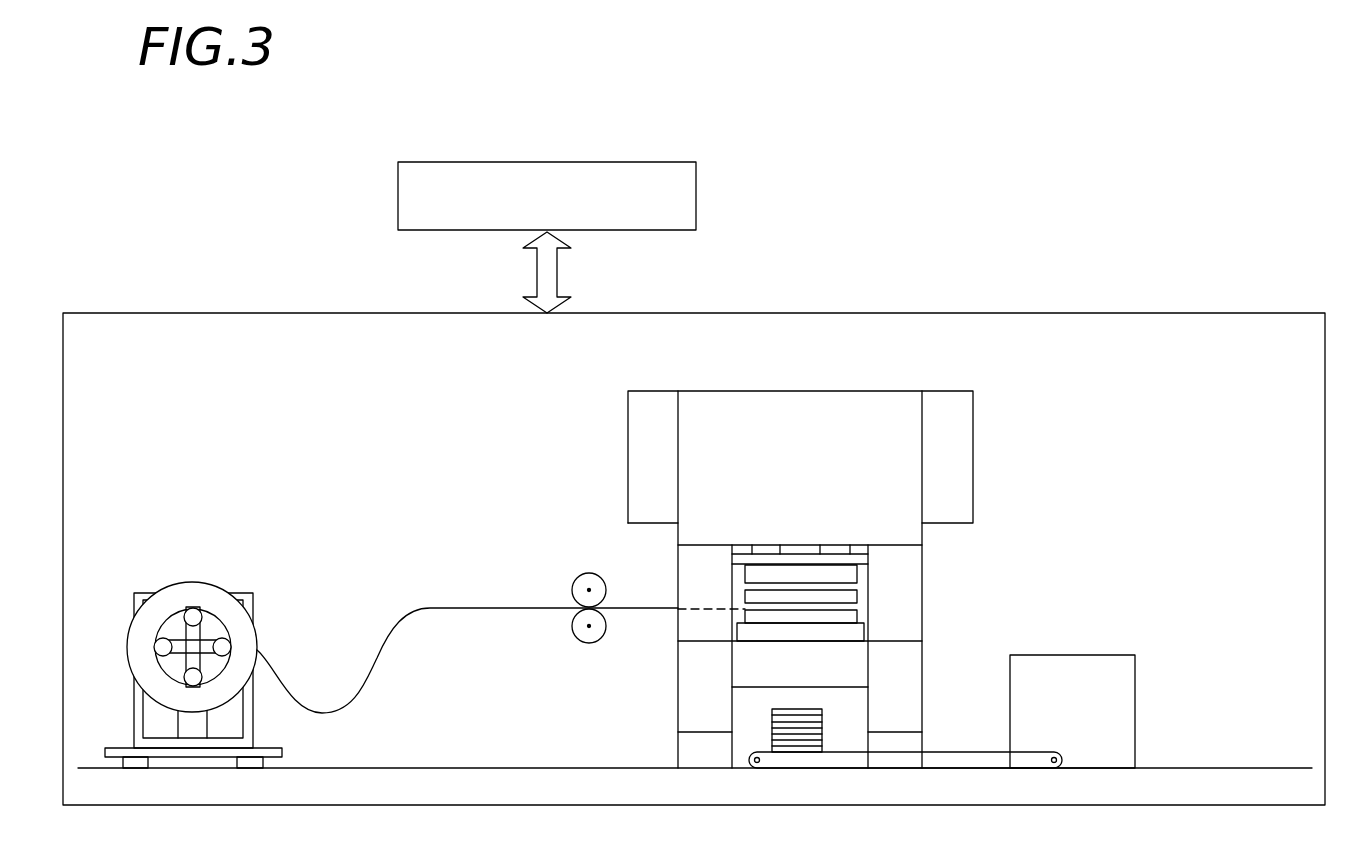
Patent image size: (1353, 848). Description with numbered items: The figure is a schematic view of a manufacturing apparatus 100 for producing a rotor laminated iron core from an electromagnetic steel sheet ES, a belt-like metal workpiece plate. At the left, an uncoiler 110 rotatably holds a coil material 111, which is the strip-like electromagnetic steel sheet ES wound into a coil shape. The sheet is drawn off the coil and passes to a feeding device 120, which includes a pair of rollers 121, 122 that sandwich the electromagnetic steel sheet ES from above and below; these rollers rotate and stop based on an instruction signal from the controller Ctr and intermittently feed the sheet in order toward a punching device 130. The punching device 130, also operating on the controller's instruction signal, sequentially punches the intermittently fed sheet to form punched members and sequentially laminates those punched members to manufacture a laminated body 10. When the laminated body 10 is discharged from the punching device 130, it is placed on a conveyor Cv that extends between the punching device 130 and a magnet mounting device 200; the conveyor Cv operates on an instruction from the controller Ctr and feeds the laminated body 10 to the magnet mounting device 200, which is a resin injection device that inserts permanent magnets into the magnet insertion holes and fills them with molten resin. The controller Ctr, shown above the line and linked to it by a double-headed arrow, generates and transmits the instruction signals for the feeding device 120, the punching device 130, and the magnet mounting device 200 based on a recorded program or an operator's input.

The manufacturing apparatus 100 is at (155, 198).
The controller Ctr is at (696, 196).
The uncoiler 110 is at (147, 592).
The coil material 111 is at (191, 581).
The electromagnetic steel sheet ES is at (283, 673).
The feeding device 120 is at (586, 581).
The roller 121 is at (599, 578).
The roller 122 is at (600, 640).
The punching device 130 is at (1010, 404).
The laminated body 10 is at (748, 719).
The conveyor Cv is at (970, 750).
The magnet mounting device 200 is at (1135, 700).